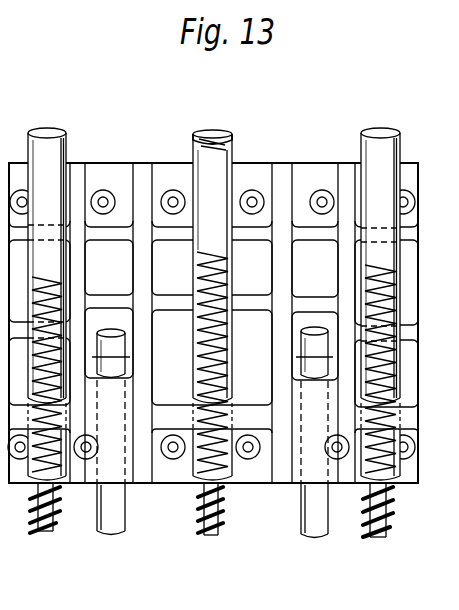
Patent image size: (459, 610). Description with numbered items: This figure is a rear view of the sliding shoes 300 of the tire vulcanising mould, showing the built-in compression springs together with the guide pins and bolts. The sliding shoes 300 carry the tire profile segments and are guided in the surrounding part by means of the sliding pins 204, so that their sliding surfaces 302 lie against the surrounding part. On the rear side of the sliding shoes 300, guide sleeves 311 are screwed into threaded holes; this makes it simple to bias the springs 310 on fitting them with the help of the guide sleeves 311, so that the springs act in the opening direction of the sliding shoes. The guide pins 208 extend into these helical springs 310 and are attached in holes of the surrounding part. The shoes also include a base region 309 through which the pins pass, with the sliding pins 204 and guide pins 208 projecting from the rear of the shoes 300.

The sliding shoe 300 is at (257, 172).
The sliding surface 302 is at (80, 168).
The base plate of housing 309 is at (138, 475).
The guide sleeve 311 is at (45, 145).
The spring 310 is at (220, 522).
The guide pin 204 is at (97, 525).
The guide pin 208 is at (52, 532).